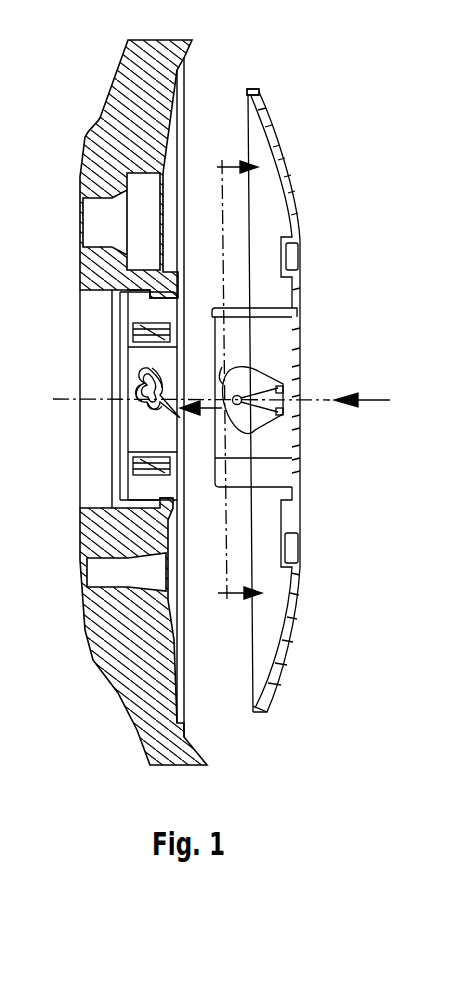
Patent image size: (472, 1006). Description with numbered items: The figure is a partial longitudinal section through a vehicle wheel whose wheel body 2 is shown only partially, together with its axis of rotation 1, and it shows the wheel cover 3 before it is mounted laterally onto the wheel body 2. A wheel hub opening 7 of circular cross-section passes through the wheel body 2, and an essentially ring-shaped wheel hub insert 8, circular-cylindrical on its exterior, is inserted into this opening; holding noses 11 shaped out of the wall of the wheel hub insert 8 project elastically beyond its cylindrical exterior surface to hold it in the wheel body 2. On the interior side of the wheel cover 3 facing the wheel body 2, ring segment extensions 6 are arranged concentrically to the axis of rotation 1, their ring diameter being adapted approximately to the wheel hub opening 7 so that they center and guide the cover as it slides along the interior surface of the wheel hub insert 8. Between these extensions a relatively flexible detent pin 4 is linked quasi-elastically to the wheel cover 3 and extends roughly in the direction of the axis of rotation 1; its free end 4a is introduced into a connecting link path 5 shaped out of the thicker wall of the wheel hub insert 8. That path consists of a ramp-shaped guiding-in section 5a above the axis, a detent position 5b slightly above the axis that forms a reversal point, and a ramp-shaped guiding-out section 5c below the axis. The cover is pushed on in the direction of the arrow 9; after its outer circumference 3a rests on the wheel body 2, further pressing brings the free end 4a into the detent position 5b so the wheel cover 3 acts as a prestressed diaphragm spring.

The axis of rotation 1 is at (62, 400).
The wheel body 2 is at (133, 42).
The wheel cover 3 is at (300, 222).
The outer circumference 3a is at (257, 92).
The detent pin 4 is at (242, 399).
The free end 4a is at (243, 393).
The connecting link path 5 is at (158, 400).
The guiding-in section 5a is at (170, 368).
The detent position 5b is at (150, 387).
The guiding-out section 5c is at (154, 410).
The ring segment extension 6 is at (255, 308).
The wheel hub opening 7 is at (125, 500).
The wheel hub insert 8 is at (178, 305).
The arrow 9 is at (197, 410).
The holding nose 11 is at (124, 330).